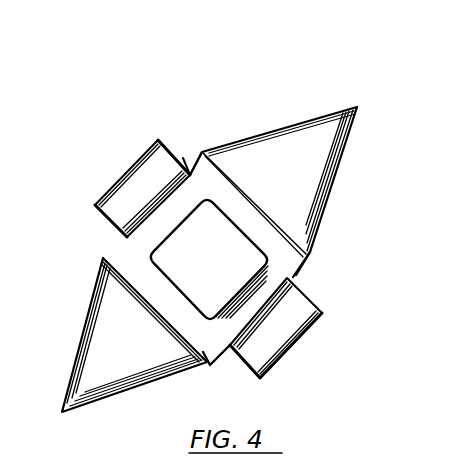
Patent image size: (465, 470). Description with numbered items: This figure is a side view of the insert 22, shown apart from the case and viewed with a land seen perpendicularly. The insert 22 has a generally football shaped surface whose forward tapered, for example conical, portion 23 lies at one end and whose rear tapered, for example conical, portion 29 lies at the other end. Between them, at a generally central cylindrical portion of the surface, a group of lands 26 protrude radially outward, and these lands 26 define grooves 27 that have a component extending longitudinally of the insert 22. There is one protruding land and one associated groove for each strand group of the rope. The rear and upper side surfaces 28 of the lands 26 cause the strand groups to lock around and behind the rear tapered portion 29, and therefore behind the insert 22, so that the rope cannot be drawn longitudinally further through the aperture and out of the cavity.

The insert 22 is at (236, 94).
The forward tapered portion 23 is at (95, 350).
The lands 26 is at (133, 161).
The grooves 27 is at (273, 278).
The rear and upper side surfaces 28 is at (180, 160).
The rear tapered portion 29 is at (325, 148).